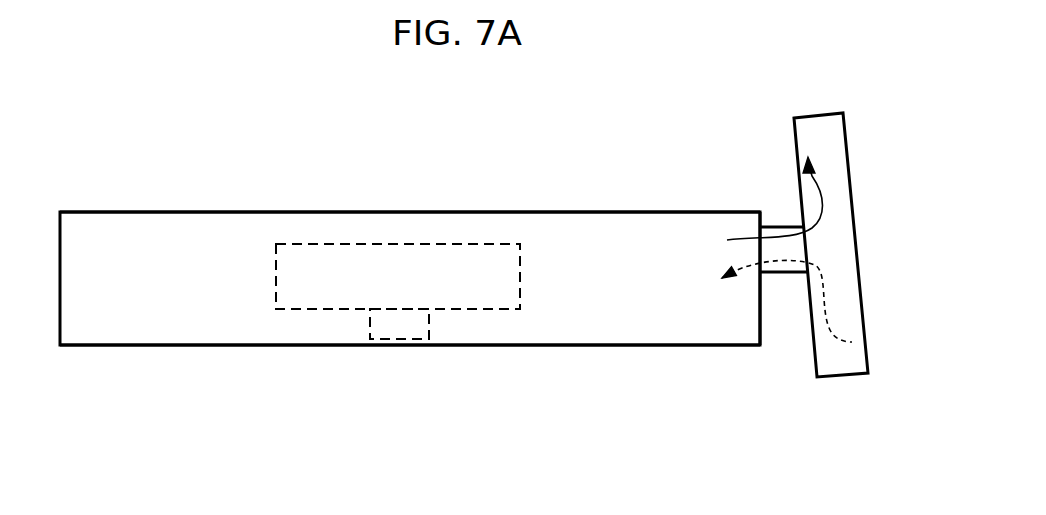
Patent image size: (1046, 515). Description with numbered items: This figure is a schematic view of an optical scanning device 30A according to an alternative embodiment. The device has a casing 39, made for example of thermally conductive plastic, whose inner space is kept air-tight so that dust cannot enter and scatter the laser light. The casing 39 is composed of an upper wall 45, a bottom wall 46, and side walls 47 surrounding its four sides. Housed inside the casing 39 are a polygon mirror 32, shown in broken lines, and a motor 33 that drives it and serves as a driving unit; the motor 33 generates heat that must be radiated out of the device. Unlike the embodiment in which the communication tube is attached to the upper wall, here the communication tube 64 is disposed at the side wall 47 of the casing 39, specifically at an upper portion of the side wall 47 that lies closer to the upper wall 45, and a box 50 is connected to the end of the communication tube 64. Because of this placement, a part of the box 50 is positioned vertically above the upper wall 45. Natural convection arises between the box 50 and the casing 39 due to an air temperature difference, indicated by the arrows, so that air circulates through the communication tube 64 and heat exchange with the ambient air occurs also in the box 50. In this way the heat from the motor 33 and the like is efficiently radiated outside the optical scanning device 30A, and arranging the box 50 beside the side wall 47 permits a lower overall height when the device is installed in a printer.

The optical scanning device 30A is at (139, 128).
The polygon mirror 32 is at (318, 244).
The motor 33 is at (413, 340).
The casing 39 is at (639, 178).
The upper wall 45 is at (504, 212).
The bottom wall 46 is at (522, 345).
The side wall 47 is at (761, 324).
The box 50 is at (818, 114).
The communication tube 64 is at (785, 226).